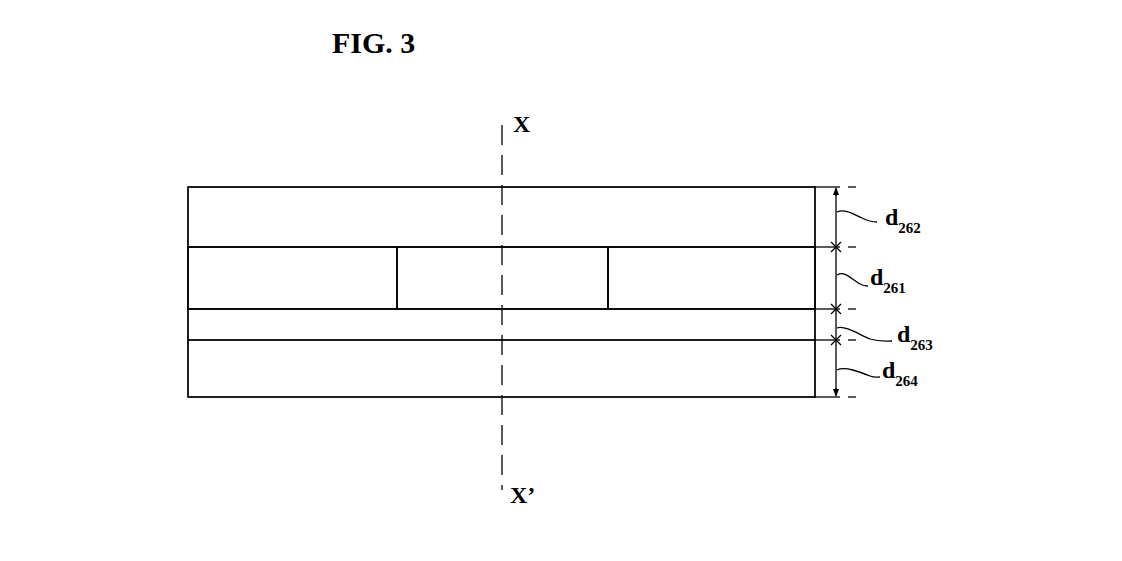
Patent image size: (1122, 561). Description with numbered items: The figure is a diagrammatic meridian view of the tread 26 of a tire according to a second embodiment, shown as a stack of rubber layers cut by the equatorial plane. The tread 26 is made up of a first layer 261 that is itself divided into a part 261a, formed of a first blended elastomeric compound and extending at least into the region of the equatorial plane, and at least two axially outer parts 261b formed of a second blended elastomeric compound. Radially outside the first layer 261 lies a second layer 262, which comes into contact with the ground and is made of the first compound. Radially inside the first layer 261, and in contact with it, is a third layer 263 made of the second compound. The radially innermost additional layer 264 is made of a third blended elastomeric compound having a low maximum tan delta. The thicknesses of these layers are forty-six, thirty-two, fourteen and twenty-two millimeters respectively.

The tread 26 is at (686, 132).
The first layer 261 is at (176, 274).
The part of the first layer 261a is at (443, 280).
The axially outer parts of the first layer 261b is at (245, 267).
The second layer 262 is at (595, 213).
The third layer 263 is at (205, 325).
The additional layer 264 is at (328, 380).